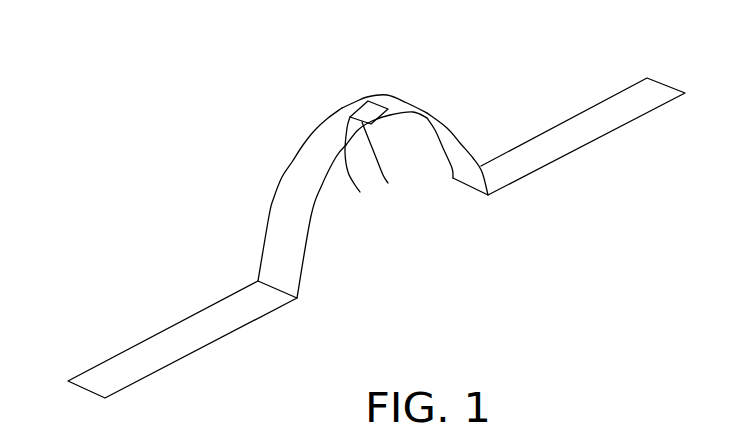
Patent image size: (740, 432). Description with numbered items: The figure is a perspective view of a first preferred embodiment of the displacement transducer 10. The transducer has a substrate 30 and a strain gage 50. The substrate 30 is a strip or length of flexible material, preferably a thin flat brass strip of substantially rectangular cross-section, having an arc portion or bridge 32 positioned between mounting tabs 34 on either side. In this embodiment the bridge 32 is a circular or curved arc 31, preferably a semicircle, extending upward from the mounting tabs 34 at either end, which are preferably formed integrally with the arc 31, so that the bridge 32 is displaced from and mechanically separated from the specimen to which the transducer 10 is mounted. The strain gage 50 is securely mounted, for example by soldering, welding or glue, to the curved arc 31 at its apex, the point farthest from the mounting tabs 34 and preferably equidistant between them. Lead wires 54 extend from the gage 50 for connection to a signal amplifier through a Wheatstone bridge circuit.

The displacement transducer 10 is at (271, 102).
The substrate 30 is at (445, 115).
The curved arc 31 is at (303, 165).
The arc portion or bridge 32 is at (436, 118).
The mounting tabs 34 is at (125, 361).
The strain gage 50 is at (367, 101).
The lead wires 54 is at (345, 152).